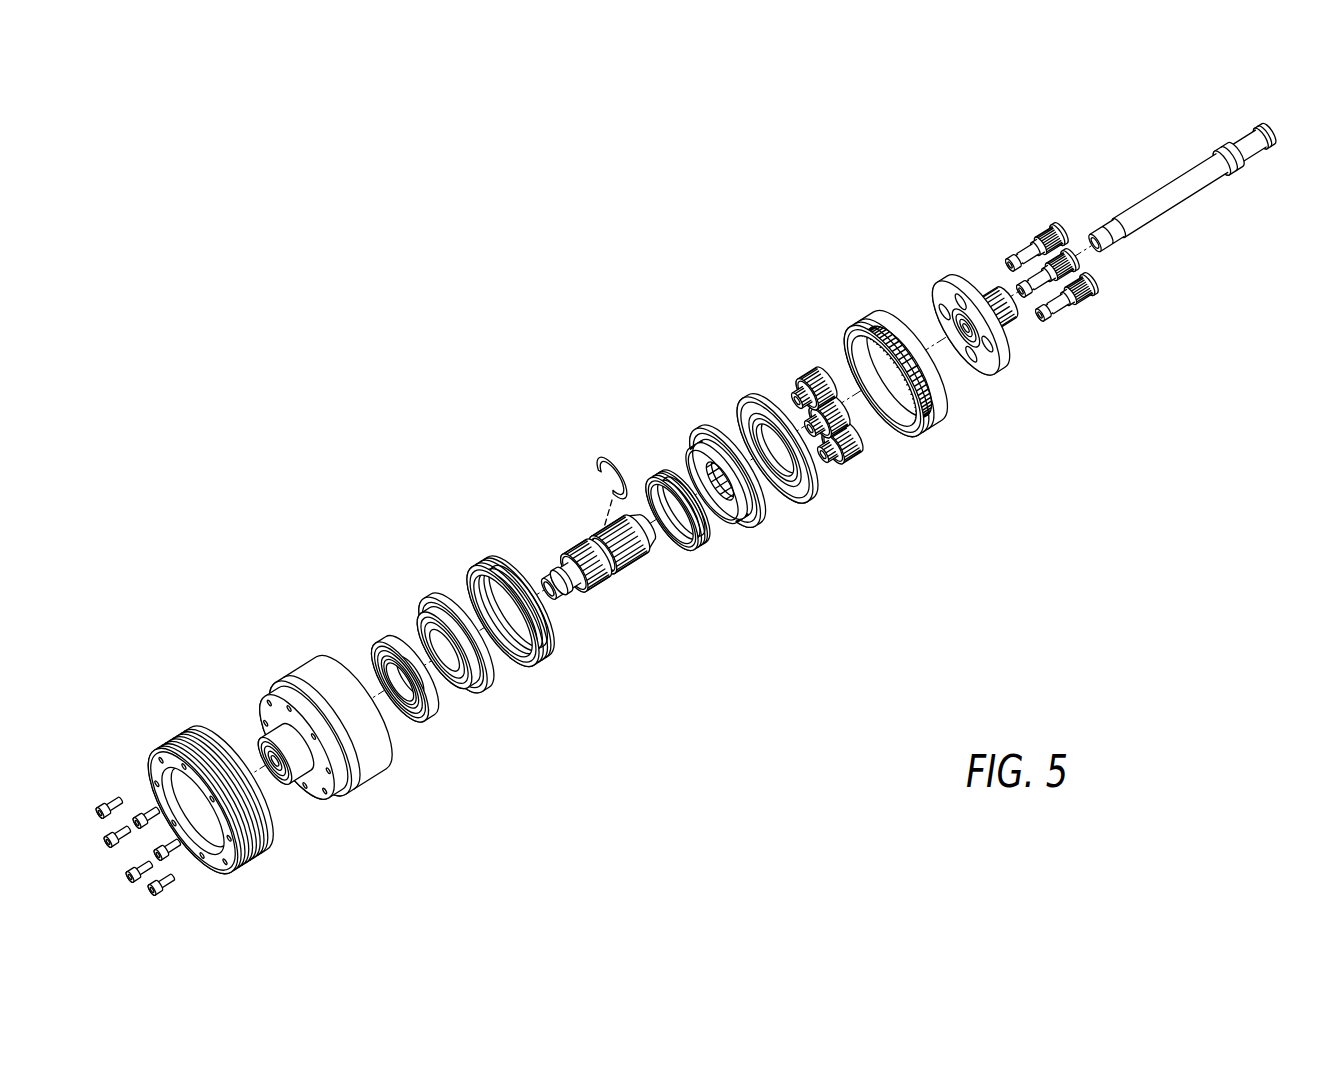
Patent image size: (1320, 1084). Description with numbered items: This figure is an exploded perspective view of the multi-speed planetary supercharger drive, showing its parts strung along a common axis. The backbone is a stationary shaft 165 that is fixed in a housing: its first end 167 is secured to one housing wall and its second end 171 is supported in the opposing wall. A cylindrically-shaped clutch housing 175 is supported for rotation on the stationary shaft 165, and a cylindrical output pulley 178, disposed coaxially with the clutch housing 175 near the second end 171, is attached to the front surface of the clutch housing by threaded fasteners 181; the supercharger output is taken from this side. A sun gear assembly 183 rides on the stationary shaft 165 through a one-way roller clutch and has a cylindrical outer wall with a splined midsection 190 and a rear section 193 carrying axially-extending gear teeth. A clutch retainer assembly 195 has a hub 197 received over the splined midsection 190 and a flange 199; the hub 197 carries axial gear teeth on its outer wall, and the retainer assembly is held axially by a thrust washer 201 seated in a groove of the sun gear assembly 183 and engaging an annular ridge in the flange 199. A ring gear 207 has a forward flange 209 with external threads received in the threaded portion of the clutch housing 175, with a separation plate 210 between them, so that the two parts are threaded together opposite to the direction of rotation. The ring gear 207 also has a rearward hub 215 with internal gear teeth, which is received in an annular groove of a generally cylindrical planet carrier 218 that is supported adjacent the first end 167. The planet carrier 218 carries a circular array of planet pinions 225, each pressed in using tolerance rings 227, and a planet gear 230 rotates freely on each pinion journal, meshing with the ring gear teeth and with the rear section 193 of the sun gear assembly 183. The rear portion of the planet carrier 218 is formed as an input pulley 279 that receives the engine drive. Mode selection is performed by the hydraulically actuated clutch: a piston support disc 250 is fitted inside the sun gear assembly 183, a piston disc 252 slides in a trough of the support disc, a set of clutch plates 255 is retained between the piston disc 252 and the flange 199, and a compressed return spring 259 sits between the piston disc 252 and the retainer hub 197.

The stationary shaft 165 is at (1180, 215).
The first end 167 is at (1250, 148).
The second end 171 is at (1107, 229).
The clutch housing 175 is at (294, 684).
The output pulley 178 is at (249, 853).
The threaded fasteners 181 is at (113, 782).
The sun gear assembly 183 is at (594, 616).
The splined midsection 190 is at (597, 540).
The rear section 193 is at (638, 562).
The clutch retainer assembly 195 is at (755, 541).
The hub 197 is at (698, 448).
The flange 199 is at (704, 432).
The thrust washer 201 is at (600, 450).
The ring gear 207 is at (942, 446).
The forward flange 209 is at (852, 322).
The separation plate 210 is at (742, 398).
The rearward hub 215 is at (883, 322).
The planet carrier 218 is at (958, 292).
The planet pinions 225 is at (1070, 326).
The tolerance rings 227 is at (1090, 298).
The planet gear 230 is at (856, 484).
The piston support disc 250 is at (365, 648).
The piston disc 252 is at (428, 609).
The clutch plates 255 is at (477, 582).
The return spring 259 is at (690, 542).
The input pulley 279 is at (993, 293).